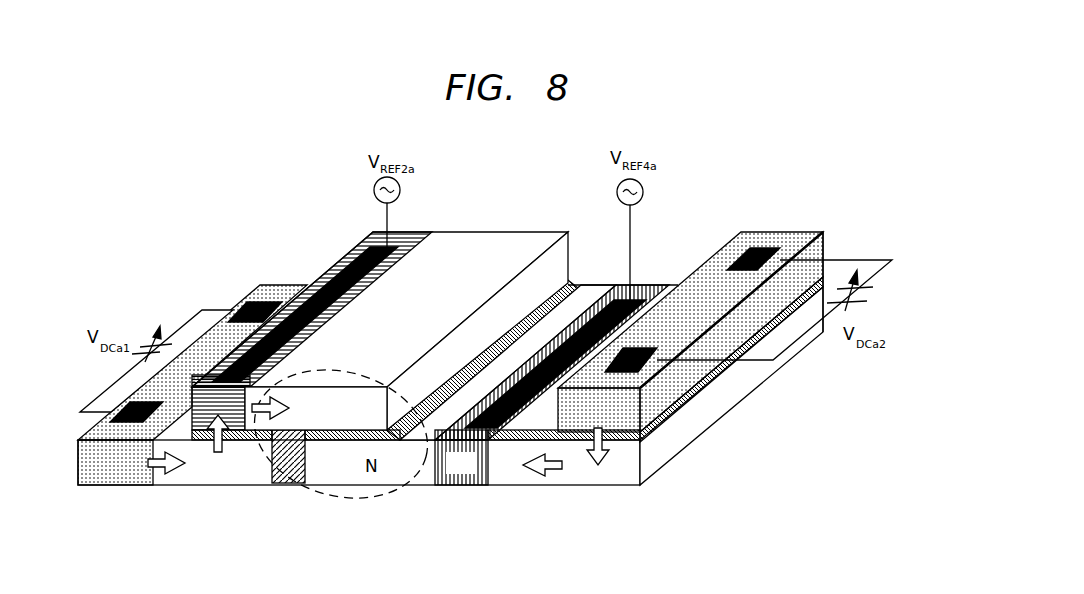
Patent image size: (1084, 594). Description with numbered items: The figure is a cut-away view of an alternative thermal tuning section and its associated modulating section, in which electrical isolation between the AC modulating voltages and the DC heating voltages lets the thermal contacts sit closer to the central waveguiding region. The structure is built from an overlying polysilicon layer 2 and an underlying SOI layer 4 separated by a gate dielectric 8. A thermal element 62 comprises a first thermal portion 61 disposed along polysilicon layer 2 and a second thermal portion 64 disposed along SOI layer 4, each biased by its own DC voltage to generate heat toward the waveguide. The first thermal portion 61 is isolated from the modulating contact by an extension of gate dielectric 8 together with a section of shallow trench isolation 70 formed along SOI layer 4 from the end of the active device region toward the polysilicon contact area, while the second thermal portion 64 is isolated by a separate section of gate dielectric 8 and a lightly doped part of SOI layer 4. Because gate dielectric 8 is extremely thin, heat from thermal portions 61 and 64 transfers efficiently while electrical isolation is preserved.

The polysilicon layer 2 is at (487, 233).
The SOI layer 4 is at (583, 297).
The gate dielectric 8 is at (573, 277).
The first thermal portion 61 is at (277, 292).
The thermal element 62 is at (110, 492).
The second thermal portion 64 is at (777, 240).
The shallow trench isolation 70 is at (288, 474).